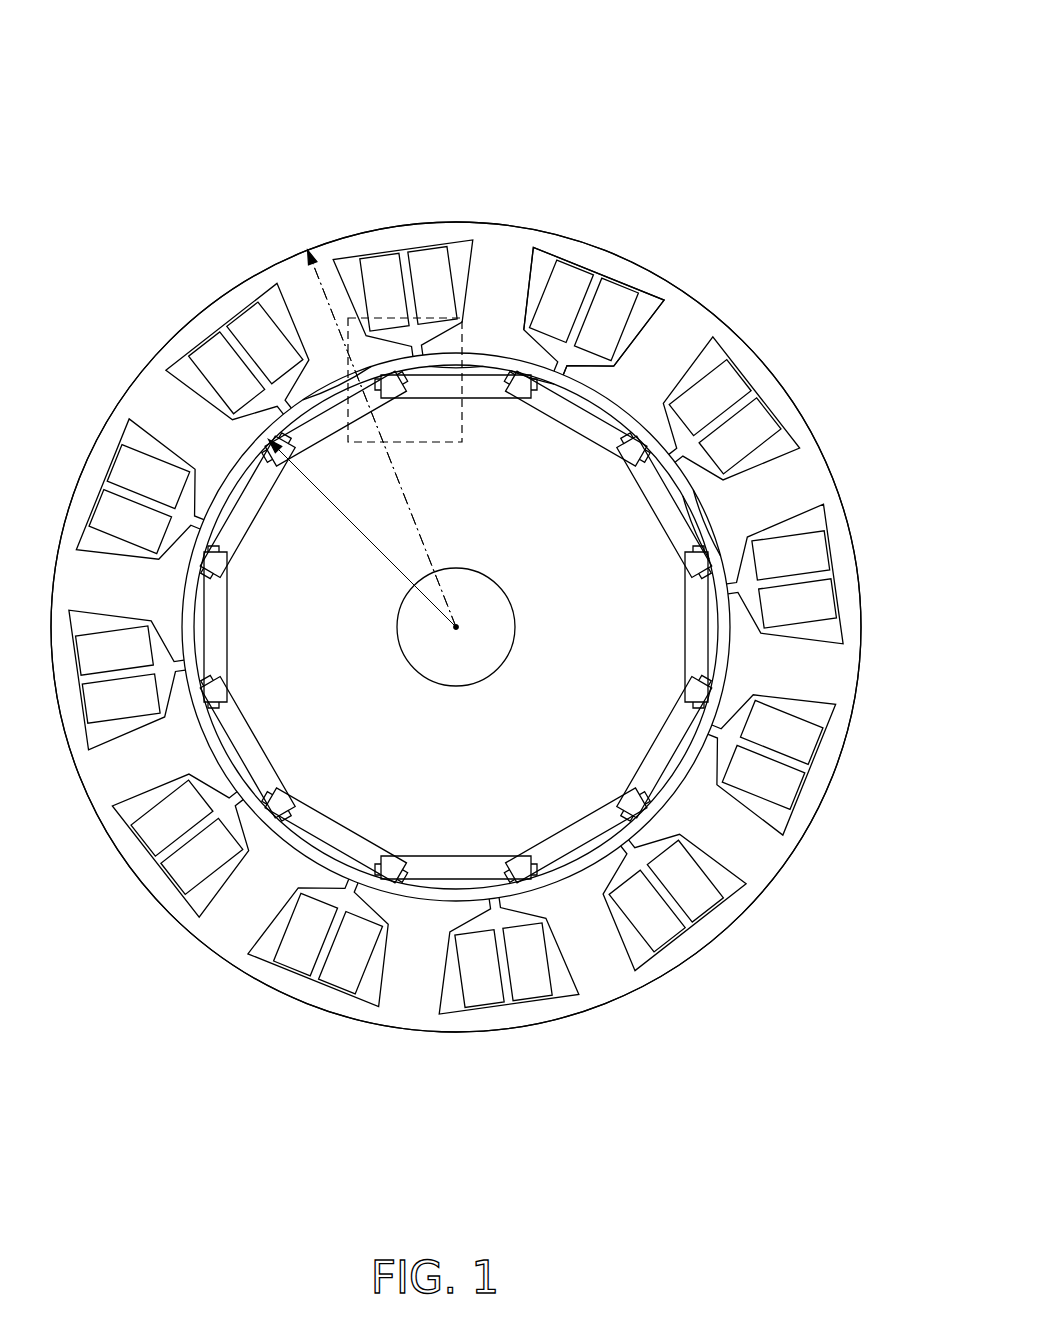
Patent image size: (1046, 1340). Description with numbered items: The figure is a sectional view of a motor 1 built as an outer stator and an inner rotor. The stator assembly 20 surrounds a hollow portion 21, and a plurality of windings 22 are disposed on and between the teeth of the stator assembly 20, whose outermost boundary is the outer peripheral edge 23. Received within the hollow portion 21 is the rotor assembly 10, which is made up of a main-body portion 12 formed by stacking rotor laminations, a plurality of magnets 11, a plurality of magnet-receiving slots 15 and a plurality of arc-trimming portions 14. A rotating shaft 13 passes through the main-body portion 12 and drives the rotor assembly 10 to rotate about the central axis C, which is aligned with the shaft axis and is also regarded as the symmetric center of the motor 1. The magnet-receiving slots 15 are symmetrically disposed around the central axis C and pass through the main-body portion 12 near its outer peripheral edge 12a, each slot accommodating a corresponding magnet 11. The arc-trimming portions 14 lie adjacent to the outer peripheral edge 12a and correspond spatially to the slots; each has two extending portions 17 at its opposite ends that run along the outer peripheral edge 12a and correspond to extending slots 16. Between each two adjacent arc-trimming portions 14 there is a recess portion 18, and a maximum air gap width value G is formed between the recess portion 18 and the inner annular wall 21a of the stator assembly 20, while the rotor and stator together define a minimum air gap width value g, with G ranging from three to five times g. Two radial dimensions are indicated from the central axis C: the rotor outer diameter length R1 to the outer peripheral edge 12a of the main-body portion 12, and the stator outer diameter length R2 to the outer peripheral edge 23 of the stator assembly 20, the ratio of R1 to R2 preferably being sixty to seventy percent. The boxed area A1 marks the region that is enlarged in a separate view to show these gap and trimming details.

The motor 1 is at (806, 50).
The rotor assembly 10 is at (690, 503).
The magnet 11 is at (264, 416).
The main-body portion 12 is at (283, 708).
The outer peripheral edge 12a is at (325, 387).
The rotating shaft 13 is at (425, 652).
The arc-trimming portion 14 is at (415, 352).
The magnet-receiving slot 15 is at (457, 872).
The extending slot 16 is at (603, 360).
The extending portion 17 is at (533, 373).
The recess portion 18 is at (708, 526).
The stator assembly 20 is at (653, 288).
The hollow portion 21 is at (195, 518).
The inner annular wall 21a is at (625, 372).
The winding 22 is at (572, 287).
The outer peripheral edge 23 is at (688, 288).
The area A1 is at (378, 312).
The central axis C is at (456, 627).
The maximum air gap width value G is at (703, 522).
The minimum air gap width value g is at (467, 350).
The rotor outer diameter length R1 is at (362, 533).
The stator outer diameter length R2 is at (382, 438).